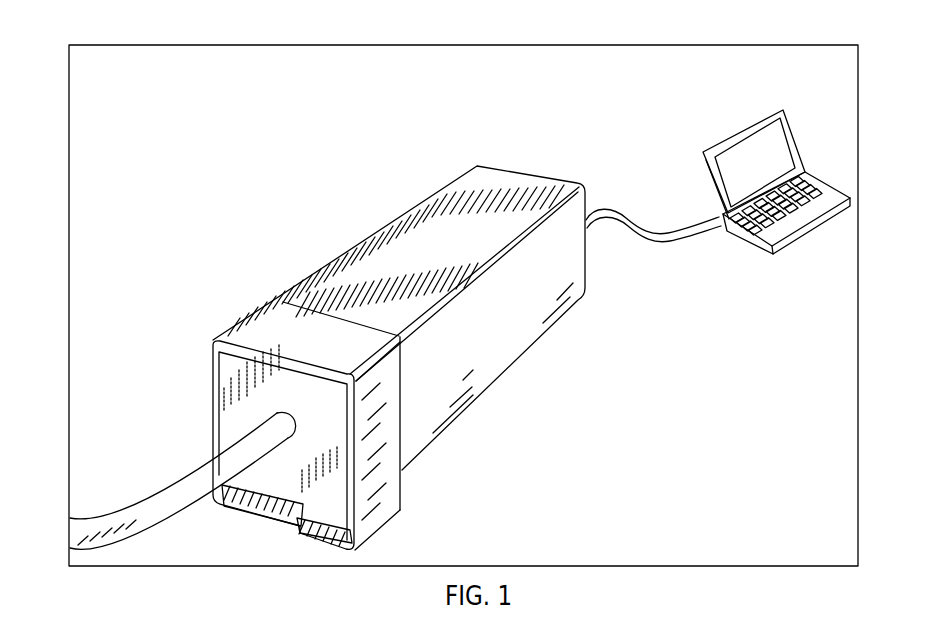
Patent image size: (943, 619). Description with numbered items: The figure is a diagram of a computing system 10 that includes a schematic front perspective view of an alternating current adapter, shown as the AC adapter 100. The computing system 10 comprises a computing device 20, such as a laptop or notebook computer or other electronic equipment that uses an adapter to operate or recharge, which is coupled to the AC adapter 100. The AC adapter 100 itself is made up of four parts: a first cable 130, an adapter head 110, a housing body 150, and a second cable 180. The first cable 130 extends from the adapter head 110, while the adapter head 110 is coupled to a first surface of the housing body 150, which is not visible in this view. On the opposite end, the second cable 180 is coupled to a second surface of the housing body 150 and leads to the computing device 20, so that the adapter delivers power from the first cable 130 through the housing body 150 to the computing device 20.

The computing system 10 is at (69, 85).
The computing device 20 is at (748, 117).
The AC adapter 100 is at (369, 189).
The adapter head 110 is at (253, 318).
The first cable 130 is at (138, 507).
The housing body 150 is at (512, 181).
The second cable 180 is at (624, 210).